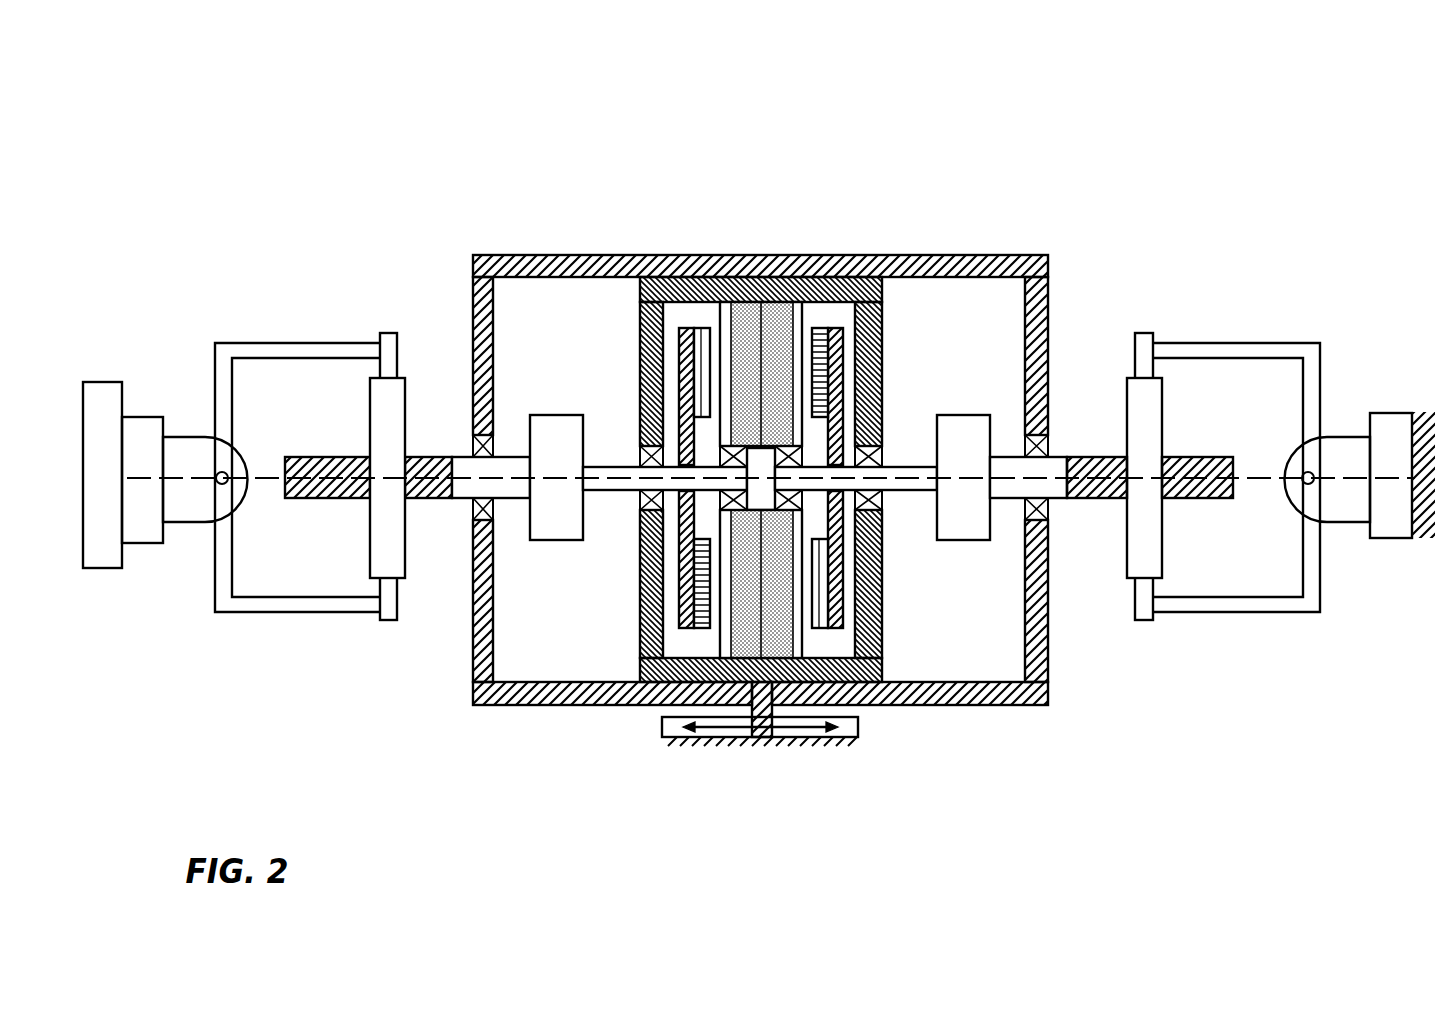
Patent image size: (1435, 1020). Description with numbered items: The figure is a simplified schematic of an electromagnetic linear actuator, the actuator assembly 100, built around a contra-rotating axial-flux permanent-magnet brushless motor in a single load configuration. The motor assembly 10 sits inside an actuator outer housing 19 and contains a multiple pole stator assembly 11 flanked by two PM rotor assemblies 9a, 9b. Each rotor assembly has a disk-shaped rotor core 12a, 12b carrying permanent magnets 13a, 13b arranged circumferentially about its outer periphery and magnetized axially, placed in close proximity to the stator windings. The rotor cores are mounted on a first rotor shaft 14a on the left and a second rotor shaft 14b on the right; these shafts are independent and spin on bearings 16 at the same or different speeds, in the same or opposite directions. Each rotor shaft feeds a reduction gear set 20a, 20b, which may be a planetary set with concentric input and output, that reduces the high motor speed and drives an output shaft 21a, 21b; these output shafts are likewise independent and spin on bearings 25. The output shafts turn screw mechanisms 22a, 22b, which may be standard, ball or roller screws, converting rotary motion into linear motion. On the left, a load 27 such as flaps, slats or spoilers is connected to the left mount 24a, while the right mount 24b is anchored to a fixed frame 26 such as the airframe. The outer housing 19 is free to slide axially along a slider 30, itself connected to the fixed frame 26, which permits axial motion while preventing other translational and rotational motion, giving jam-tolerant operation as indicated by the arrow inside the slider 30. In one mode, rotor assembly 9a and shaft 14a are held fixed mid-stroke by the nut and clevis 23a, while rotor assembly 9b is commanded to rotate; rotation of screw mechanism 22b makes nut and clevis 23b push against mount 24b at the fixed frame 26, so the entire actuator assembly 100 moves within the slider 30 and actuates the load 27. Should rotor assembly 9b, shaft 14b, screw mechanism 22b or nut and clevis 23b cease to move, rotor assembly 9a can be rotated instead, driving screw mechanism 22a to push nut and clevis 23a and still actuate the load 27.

The actuator assembly 100 is at (1052, 104).
The rotor assembly 9a is at (622, 508).
The rotor assembly 9b is at (903, 508).
The motor assembly 10 is at (863, 647).
The stator assembly 11 is at (748, 350).
The rotor core 12a is at (690, 328).
The rotor core 12b is at (838, 328).
The permanent magnets 13a is at (700, 327).
The permanent magnets 13b is at (818, 328).
The first rotor shaft 14a is at (608, 467).
The second rotor shaft 14b is at (917, 470).
The bearings 16 is at (637, 493).
The actuator outer housing 19 is at (1050, 262).
The reduction gear set 20a is at (550, 505).
The reduction gear set 20b is at (981, 507).
The output shaft 21a is at (510, 455).
The output shaft 21b is at (1048, 472).
The screw mechanism 22a is at (442, 497).
The screw mechanism 22b is at (1087, 500).
The nut and clevis 23a is at (326, 350).
The nut and clevis 23b is at (1237, 345).
The left mount 24a is at (145, 417).
The right mount 24b is at (1390, 413).
The bearings 25 is at (473, 555).
The fixed frame 26 is at (1425, 537).
The load 27 is at (102, 572).
The slider 30 is at (790, 750).